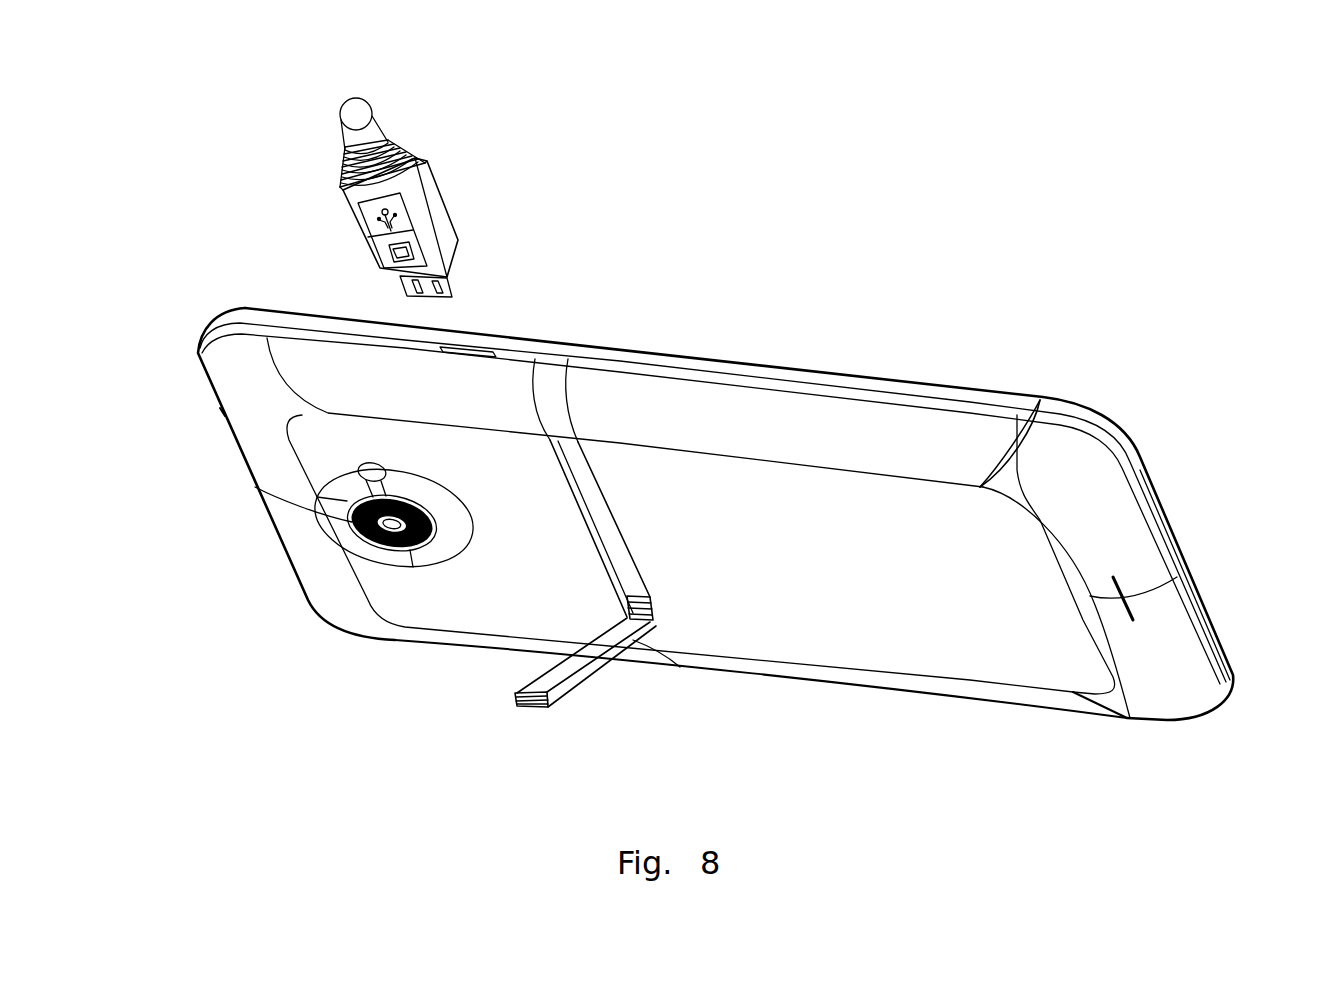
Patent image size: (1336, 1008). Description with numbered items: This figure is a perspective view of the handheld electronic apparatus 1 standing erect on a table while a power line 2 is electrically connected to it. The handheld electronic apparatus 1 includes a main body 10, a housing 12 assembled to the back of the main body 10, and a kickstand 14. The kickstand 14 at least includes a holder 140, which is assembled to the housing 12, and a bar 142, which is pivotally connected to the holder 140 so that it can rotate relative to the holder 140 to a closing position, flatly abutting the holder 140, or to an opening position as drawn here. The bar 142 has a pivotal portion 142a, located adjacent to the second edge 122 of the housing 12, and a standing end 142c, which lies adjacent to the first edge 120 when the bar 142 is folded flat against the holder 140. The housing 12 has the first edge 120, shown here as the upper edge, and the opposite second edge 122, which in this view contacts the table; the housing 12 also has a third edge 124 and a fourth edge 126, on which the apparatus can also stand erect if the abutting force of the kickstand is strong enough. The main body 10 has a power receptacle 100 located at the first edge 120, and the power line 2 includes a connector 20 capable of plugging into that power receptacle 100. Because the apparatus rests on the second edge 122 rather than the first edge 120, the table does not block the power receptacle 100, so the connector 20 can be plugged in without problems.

The handheld electronic apparatus 1 is at (158, 132).
The power line 2 is at (340, 123).
The connector 20 is at (433, 215).
The main body 10 is at (770, 365).
The power receptacle 100 is at (485, 353).
The first edge 120 is at (633, 375).
The second edge 122 is at (860, 690).
The third edge 124 is at (1217, 623).
The fourth edge 126 is at (282, 551).
The housing 12 is at (1125, 517).
The kickstand 14 is at (607, 672).
The holder 140 is at (607, 537).
The bar 142 is at (570, 695).
The pivotal portion 142a is at (627, 607).
The standing end 142c is at (527, 708).